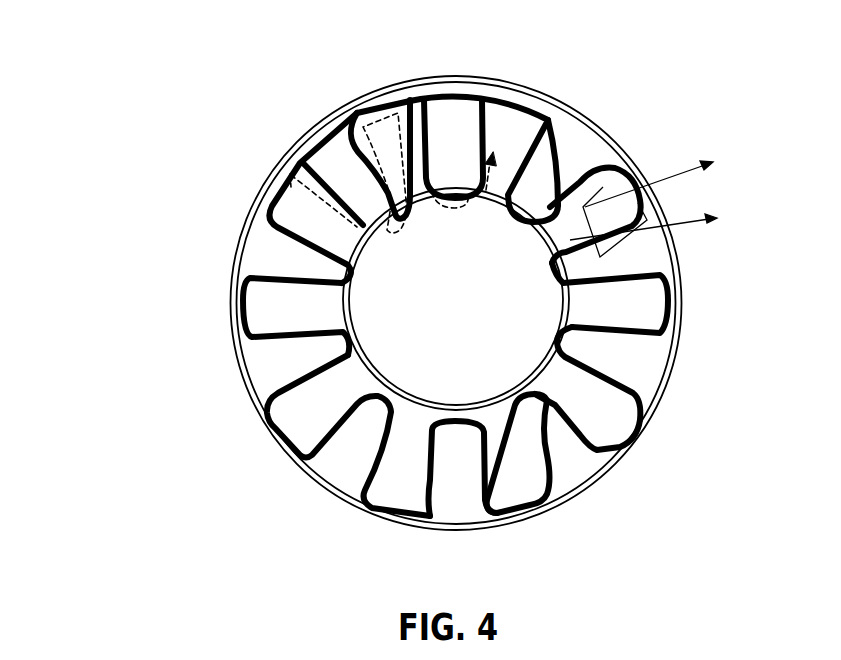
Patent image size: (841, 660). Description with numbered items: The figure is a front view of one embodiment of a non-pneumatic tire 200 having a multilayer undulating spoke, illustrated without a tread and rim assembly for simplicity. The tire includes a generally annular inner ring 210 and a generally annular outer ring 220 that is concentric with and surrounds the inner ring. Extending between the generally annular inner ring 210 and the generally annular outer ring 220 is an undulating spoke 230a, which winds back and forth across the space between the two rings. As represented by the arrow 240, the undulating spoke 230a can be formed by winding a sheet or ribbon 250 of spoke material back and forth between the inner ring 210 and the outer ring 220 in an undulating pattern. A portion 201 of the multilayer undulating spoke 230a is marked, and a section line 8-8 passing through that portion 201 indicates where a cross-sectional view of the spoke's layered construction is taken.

The non-pneumatic tire 200 is at (213, 112).
The undulating spoke 230a is at (210, 166).
The arrow 240 is at (387, 99).
The sheet or ribbon 250 is at (522, 100).
The portion 201 is at (620, 222).
The line 8- 8 is at (658, 189).
The generally annular inner ring 210 is at (352, 302).
The generally annular outer ring 220 is at (237, 360).